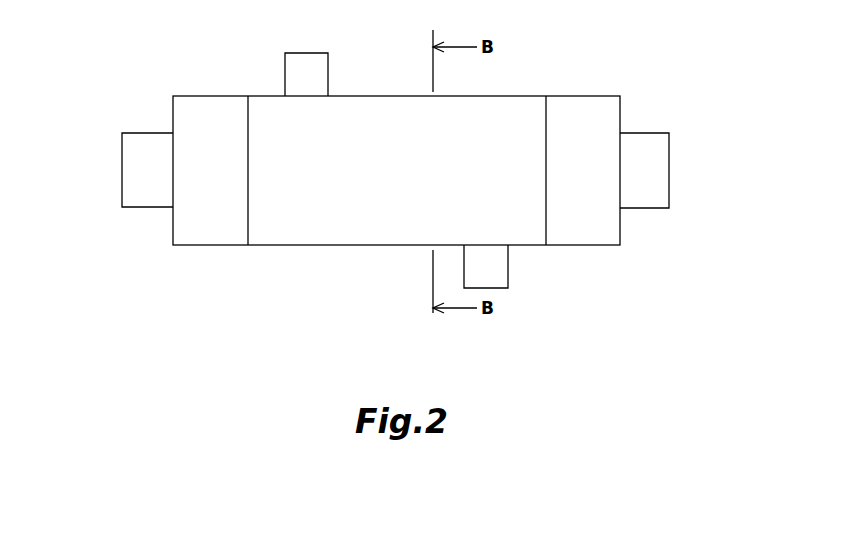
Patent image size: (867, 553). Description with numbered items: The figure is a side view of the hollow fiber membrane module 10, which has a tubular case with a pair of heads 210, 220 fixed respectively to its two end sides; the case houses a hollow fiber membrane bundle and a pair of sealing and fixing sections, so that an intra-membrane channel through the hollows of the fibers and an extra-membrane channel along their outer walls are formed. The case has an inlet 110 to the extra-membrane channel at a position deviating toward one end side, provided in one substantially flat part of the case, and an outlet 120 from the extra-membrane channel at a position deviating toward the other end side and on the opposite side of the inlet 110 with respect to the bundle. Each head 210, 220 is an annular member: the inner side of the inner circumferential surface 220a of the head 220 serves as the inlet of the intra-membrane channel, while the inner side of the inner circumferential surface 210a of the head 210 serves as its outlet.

The hollow fiber membrane module 10 is at (657, 92).
The inlet 110 is at (285, 53).
The outlet 120 is at (497, 288).
The head 210 is at (185, 225).
The inner circumferential surface of the head 210a is at (121, 152).
The head 220 is at (608, 221).
The inner circumferential surface of the head 220a is at (669, 158).